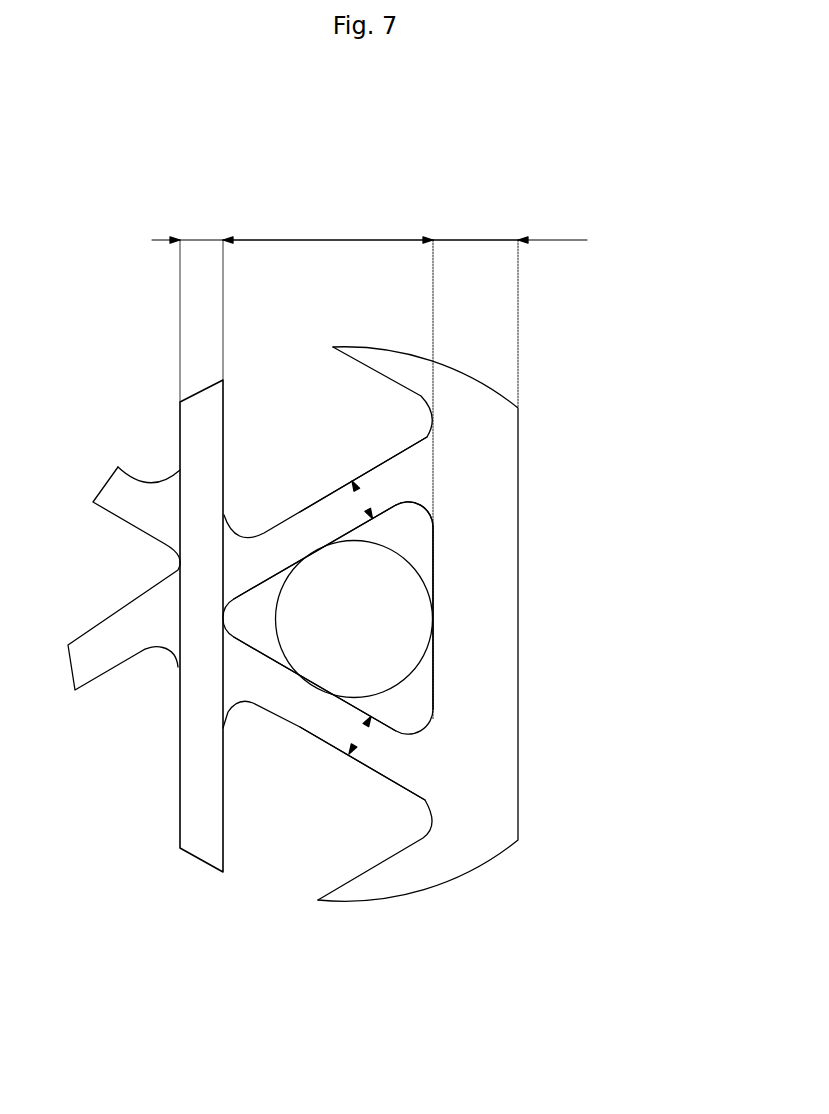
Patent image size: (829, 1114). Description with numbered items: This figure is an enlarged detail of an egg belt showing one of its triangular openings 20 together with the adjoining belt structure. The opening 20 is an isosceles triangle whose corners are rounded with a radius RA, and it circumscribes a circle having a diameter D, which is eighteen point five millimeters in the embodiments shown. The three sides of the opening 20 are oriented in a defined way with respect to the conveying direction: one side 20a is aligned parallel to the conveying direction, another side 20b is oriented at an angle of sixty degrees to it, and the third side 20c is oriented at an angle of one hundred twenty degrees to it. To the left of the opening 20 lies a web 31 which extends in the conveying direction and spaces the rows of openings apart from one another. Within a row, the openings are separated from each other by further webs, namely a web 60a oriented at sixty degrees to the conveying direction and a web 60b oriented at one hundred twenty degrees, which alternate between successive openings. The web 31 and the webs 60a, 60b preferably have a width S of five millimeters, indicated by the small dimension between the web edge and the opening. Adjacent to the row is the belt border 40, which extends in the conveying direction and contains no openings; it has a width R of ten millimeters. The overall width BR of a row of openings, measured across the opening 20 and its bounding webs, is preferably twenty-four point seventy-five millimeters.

The opening 20 is at (415, 540).
The side of opening 20a is at (435, 670).
The side of opening 20b is at (257, 583).
The side of opening 20c is at (260, 657).
The web 31 is at (205, 788).
The belt border 40 is at (482, 772).
The web 60a is at (297, 538).
The web 60b is at (297, 707).
The width of webs S is at (338, 772).
The width of a row BR is at (328, 224).
The width of border R is at (505, 224).
The radius of rounded corners RA is at (408, 527).
The diameter of circumscribed circle D is at (277, 640).